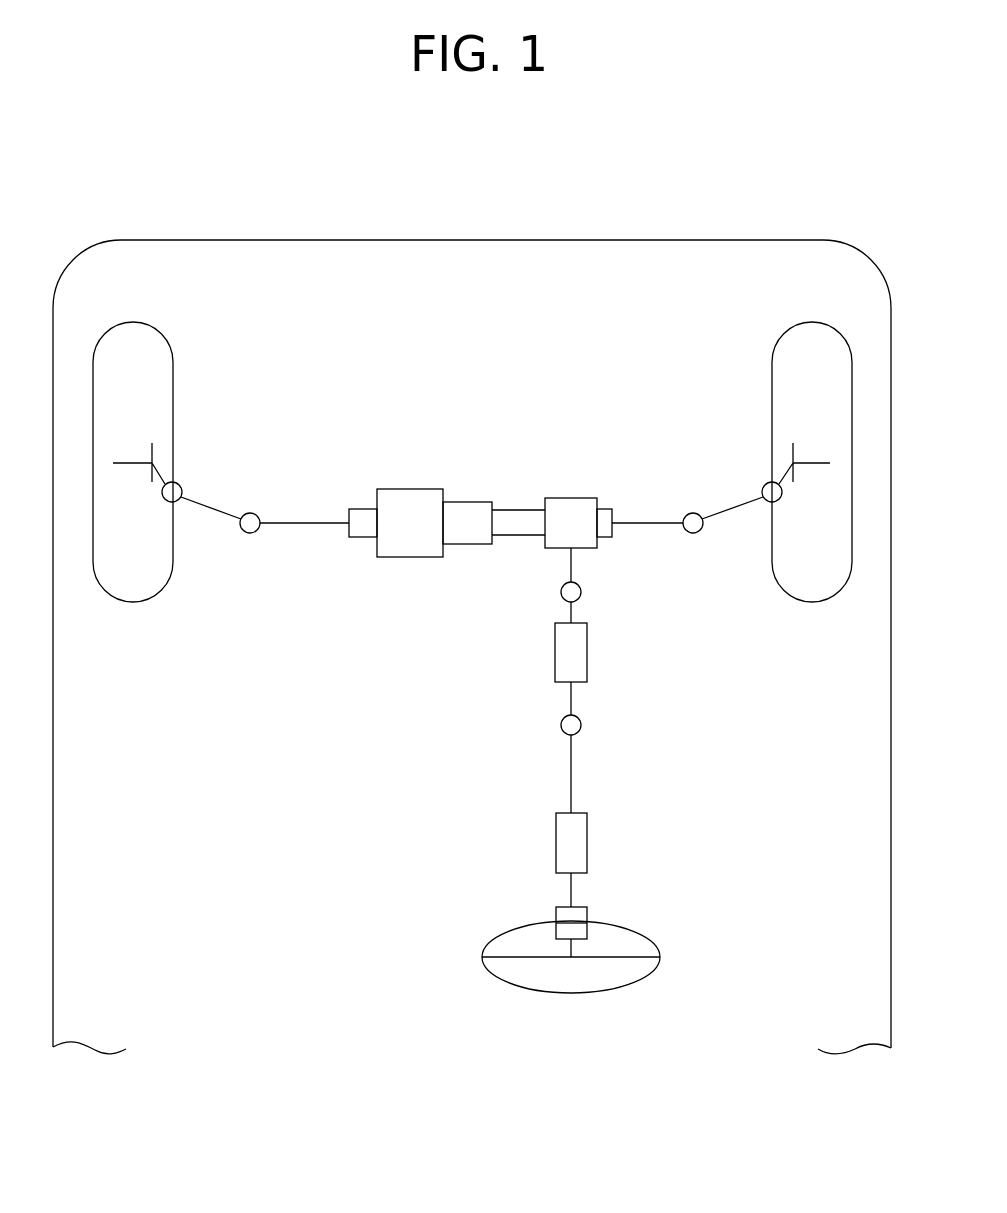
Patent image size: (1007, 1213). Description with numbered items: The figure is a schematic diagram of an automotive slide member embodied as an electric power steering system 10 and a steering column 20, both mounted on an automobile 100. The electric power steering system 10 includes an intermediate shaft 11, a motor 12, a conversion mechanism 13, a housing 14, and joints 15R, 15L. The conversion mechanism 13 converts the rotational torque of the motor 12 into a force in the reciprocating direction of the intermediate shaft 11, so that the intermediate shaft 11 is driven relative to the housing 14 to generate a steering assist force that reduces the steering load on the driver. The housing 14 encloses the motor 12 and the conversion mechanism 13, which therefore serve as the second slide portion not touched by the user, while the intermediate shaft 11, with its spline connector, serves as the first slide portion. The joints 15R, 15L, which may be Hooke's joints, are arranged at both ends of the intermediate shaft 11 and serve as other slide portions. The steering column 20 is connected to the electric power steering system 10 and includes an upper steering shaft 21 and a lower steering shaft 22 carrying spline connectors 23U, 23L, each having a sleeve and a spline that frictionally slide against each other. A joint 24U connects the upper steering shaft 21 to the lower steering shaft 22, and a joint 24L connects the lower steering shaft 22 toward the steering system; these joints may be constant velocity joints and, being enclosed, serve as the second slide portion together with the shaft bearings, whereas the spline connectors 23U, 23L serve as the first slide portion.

The automobile 100 is at (823, 240).
The electric power steering system 10 is at (455, 388).
The intermediate shaft 11 is at (311, 520).
The motor 12 is at (413, 488).
The conversion mechanism 13 is at (469, 501).
The housing 14 is at (361, 508).
The joint 15L is at (251, 512).
The joint 15R is at (694, 512).
The steering column 20 is at (465, 765).
The upper steering shaft 21 is at (575, 783).
The lower steering shaft 22 is at (568, 703).
The spline connector 23L is at (588, 650).
The spline connector 23U is at (588, 848).
The joint 24L is at (582, 592).
The joint 24U is at (582, 725).